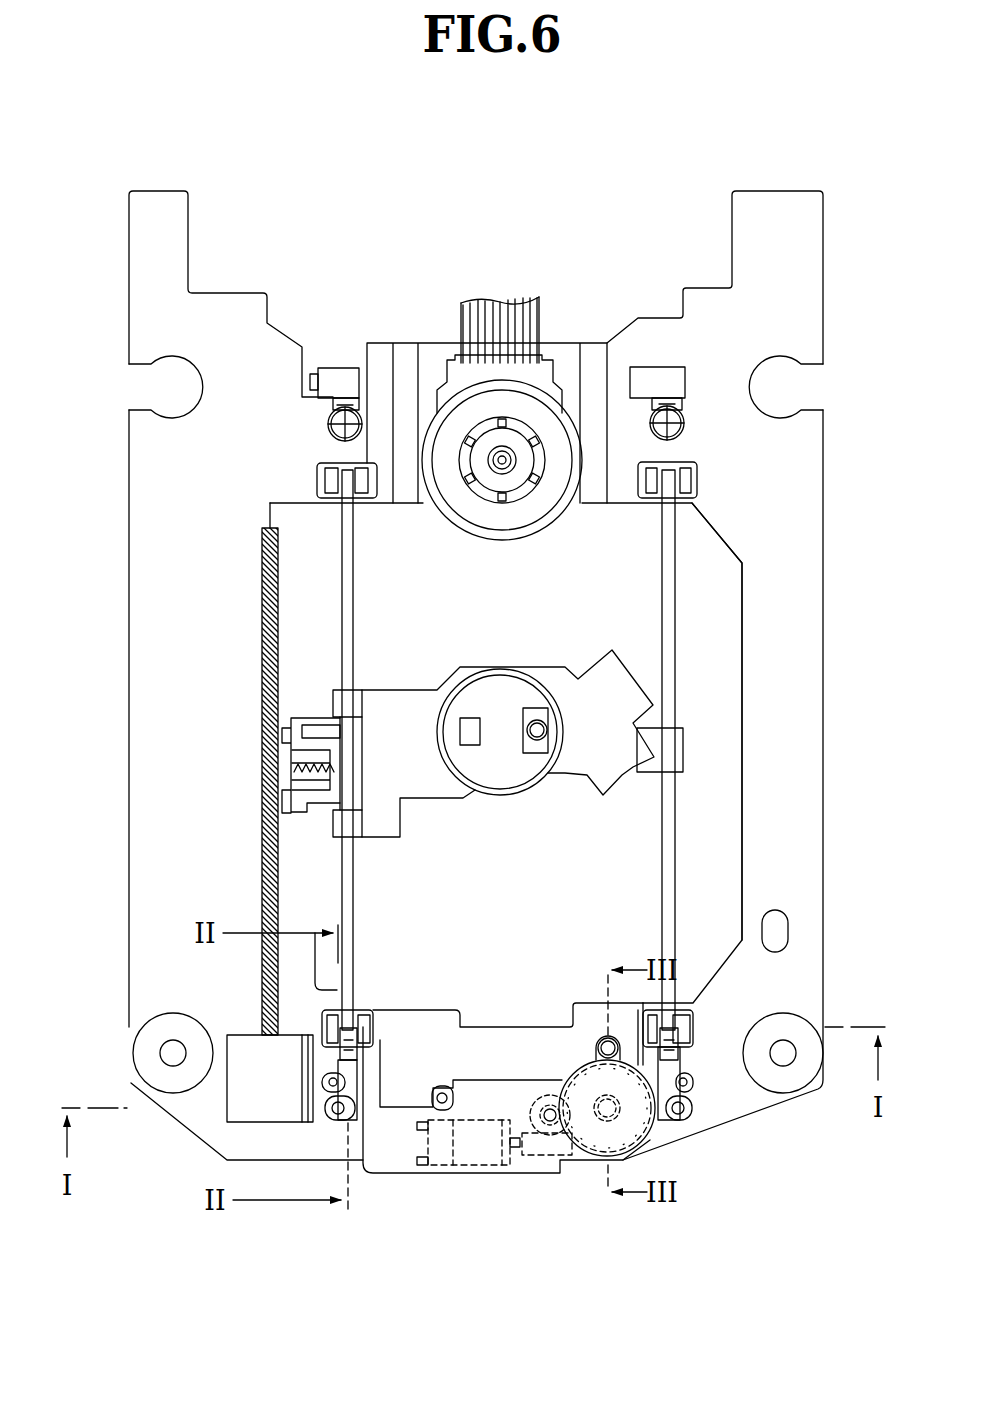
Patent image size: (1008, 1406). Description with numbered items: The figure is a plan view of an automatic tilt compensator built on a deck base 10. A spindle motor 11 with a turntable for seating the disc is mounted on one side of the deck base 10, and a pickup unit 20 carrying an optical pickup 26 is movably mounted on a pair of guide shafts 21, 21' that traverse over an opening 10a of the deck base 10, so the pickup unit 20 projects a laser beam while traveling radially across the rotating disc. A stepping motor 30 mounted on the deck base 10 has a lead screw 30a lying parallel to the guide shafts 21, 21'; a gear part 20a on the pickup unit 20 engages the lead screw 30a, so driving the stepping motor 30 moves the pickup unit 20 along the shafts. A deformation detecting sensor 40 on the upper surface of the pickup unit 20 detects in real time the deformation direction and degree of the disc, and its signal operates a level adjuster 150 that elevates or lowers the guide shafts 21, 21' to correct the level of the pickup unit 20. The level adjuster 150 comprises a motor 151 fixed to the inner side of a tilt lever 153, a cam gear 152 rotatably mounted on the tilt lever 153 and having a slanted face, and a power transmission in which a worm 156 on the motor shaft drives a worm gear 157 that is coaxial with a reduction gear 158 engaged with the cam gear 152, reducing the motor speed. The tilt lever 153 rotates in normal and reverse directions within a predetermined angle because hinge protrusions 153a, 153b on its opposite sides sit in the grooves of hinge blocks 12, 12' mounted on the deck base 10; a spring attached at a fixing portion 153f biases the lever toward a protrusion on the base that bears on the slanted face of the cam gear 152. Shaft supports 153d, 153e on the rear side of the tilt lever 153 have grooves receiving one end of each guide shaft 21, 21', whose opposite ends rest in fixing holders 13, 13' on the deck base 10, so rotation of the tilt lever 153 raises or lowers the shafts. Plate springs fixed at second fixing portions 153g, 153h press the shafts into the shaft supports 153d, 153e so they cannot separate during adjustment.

The deck base 10 is at (826, 593).
The opening 10a is at (606, 843).
The spindle motor 11 is at (543, 403).
The hinge block 12 is at (263, 1124).
The hinge block 12' is at (757, 1115).
The fixing holder 13 is at (225, 472).
The fixing holder 13' is at (764, 465).
The pickup unit 20 is at (467, 721).
The gear part 20a is at (290, 770).
The guide shaft 21 is at (210, 750).
The guide shaft 21' is at (781, 750).
The optical pickup 26 is at (537, 722).
The stepping motor 30 is at (243, 1043).
The lead screw 30a is at (263, 830).
The deformation detecting sensor 40 is at (463, 730).
The level adjuster 150 is at (648, 1148).
The motor 151 is at (437, 1157).
The cam gear 152 is at (588, 1147).
The tilt lever 153 is at (388, 1165).
The hinge protrusion 153a is at (360, 1073).
The hinge protrusion 153b is at (677, 985).
The shaft support 153d is at (362, 1018).
The shaft support 153e is at (687, 1023).
The fixing portion 153f is at (608, 1038).
The second fixing portion 153g is at (338, 1114).
The second fixing portion 153h is at (682, 1122).
The worm 156 is at (523, 1163).
The worm gear 157 is at (540, 1155).
The reduction gear 158 is at (552, 1127).